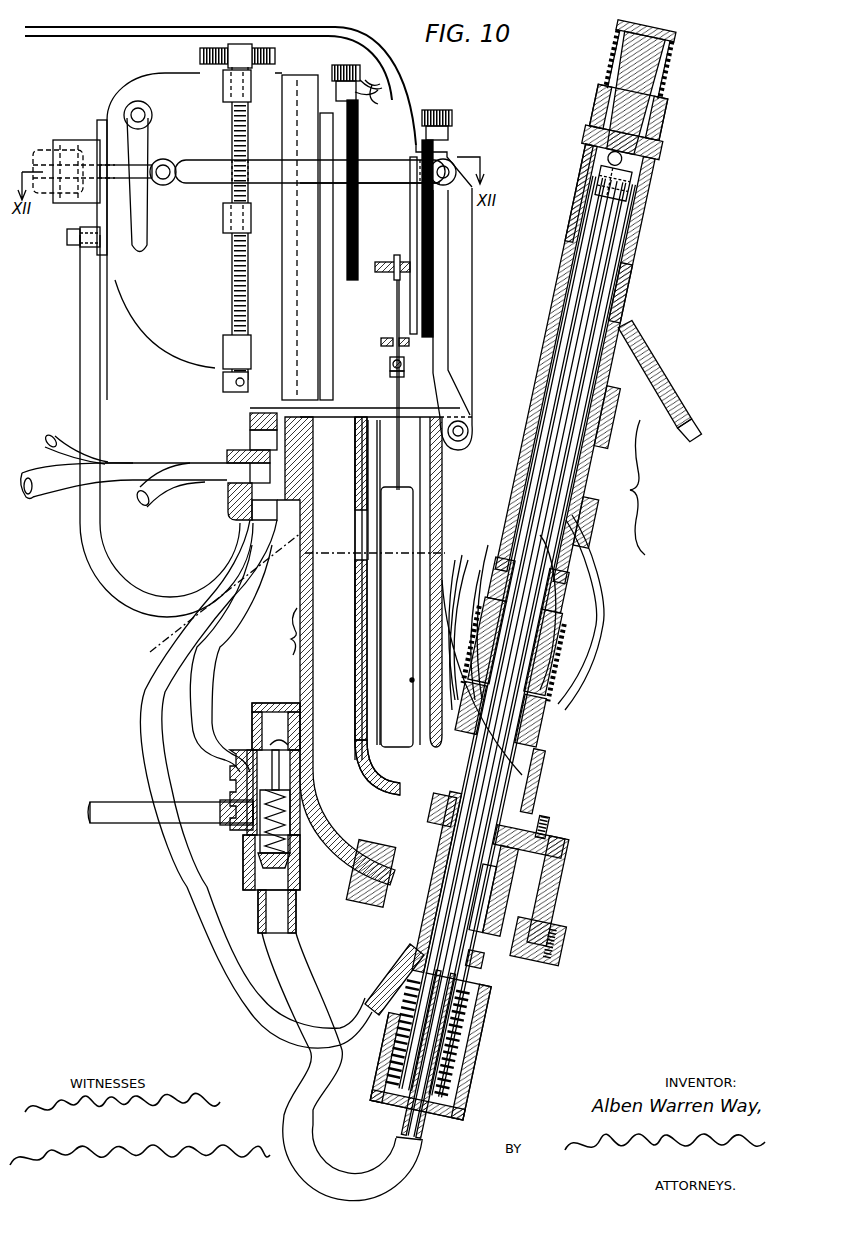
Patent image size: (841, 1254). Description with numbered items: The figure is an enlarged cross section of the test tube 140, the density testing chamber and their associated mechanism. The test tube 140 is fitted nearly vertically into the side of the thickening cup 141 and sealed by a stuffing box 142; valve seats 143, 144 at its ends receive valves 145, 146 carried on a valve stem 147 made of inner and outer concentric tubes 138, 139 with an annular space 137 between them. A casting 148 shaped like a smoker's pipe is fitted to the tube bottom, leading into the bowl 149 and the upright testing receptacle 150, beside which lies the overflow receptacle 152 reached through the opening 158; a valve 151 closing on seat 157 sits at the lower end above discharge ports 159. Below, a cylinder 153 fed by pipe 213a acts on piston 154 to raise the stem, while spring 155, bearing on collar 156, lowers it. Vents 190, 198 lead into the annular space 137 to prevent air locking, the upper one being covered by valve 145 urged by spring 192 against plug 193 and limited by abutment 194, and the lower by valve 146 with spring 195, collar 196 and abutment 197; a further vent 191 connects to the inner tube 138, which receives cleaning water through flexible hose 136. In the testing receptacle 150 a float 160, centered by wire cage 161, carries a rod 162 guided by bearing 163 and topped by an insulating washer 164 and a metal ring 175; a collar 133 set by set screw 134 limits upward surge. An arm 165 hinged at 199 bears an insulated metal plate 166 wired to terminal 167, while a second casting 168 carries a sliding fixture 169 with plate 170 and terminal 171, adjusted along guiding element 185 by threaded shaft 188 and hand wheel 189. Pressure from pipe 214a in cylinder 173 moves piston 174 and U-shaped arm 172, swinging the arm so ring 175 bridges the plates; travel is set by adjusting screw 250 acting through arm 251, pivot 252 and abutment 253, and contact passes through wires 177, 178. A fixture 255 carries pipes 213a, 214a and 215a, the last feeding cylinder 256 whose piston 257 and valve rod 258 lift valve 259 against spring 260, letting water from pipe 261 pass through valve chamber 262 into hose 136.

The collar 133 is at (390, 364).
The set screw 134 is at (392, 376).
The flexible hose 136 is at (285, 953).
The annular space 137 is at (615, 305).
The inner tube 138 is at (622, 232).
The outer tube 139 is at (612, 254).
The test tube 140 is at (654, 487).
The thickening cup 141 is at (662, 345).
The stuffing box 142 is at (640, 282).
The valve seat 143 is at (662, 133).
The valve seat 144 is at (602, 563).
The valve 145 is at (668, 110).
The valve 146 is at (606, 614).
The valve stem 147 is at (585, 456).
The casting 148 is at (616, 648).
The bowl 149 is at (399, 606).
The testing receptacle 150 is at (428, 512).
The valve 151 is at (540, 812).
The overflow receptacle 152 is at (302, 588).
The cylinder 153 is at (505, 902).
The piston 154 is at (482, 955).
The spring 155 is at (470, 1024).
The collar 156 is at (460, 1112).
The valve seat 157 is at (556, 826).
The opening 158 is at (360, 528).
The discharge ports 159 is at (397, 908).
The float 160 is at (416, 503).
The wire cage 161 is at (376, 470).
The rod 162 is at (396, 406).
The bearing 163 is at (381, 343).
The washer 164 is at (455, 300).
The arm 165 is at (460, 352).
The metal plate 166 is at (420, 226).
The electric terminal 167 is at (455, 118).
The second casting 168 is at (190, 372).
The sliding fixture 169 is at (223, 222).
The metal plate 170 is at (360, 194).
The electrical terminal 171 is at (368, 96).
The U-shaped arm 172 is at (390, 162).
The cylinder 173 is at (50, 190).
The piston 174 is at (58, 156).
The metal ring 175 is at (399, 255).
The wire 177 is at (378, 68).
The wire 178 is at (387, 86).
The guiding element 185 is at (307, 224).
The threaded shaft 188 is at (232, 262).
The hand wheel 189 is at (200, 57).
The vent 190 is at (625, 190).
The vent 191 is at (625, 158).
The spring 192 is at (668, 58).
The plug 193 is at (672, 34).
The abutment 194 is at (585, 195).
The spring 195 is at (545, 642).
The collar 196 is at (530, 672).
The abutment 197 is at (508, 578).
The vent 198 is at (537, 587).
The hinge 199 is at (470, 440).
The pipe 213a is at (48, 480).
The pipe 214a is at (85, 345).
The pipe 215a is at (172, 495).
The adjusting screw 250 is at (67, 243).
The arm 251 is at (143, 258).
The pivot 252 is at (146, 115).
The abutment 253 is at (156, 160).
The fixture 255 is at (226, 450).
The cylinder 256 is at (274, 703).
The piston 257 is at (292, 742).
The valve rod 258 is at (285, 767).
The valve 259 is at (302, 855).
The spring 260 is at (266, 840).
The pipe 261 is at (130, 827).
The valve chamber 262 is at (232, 785).